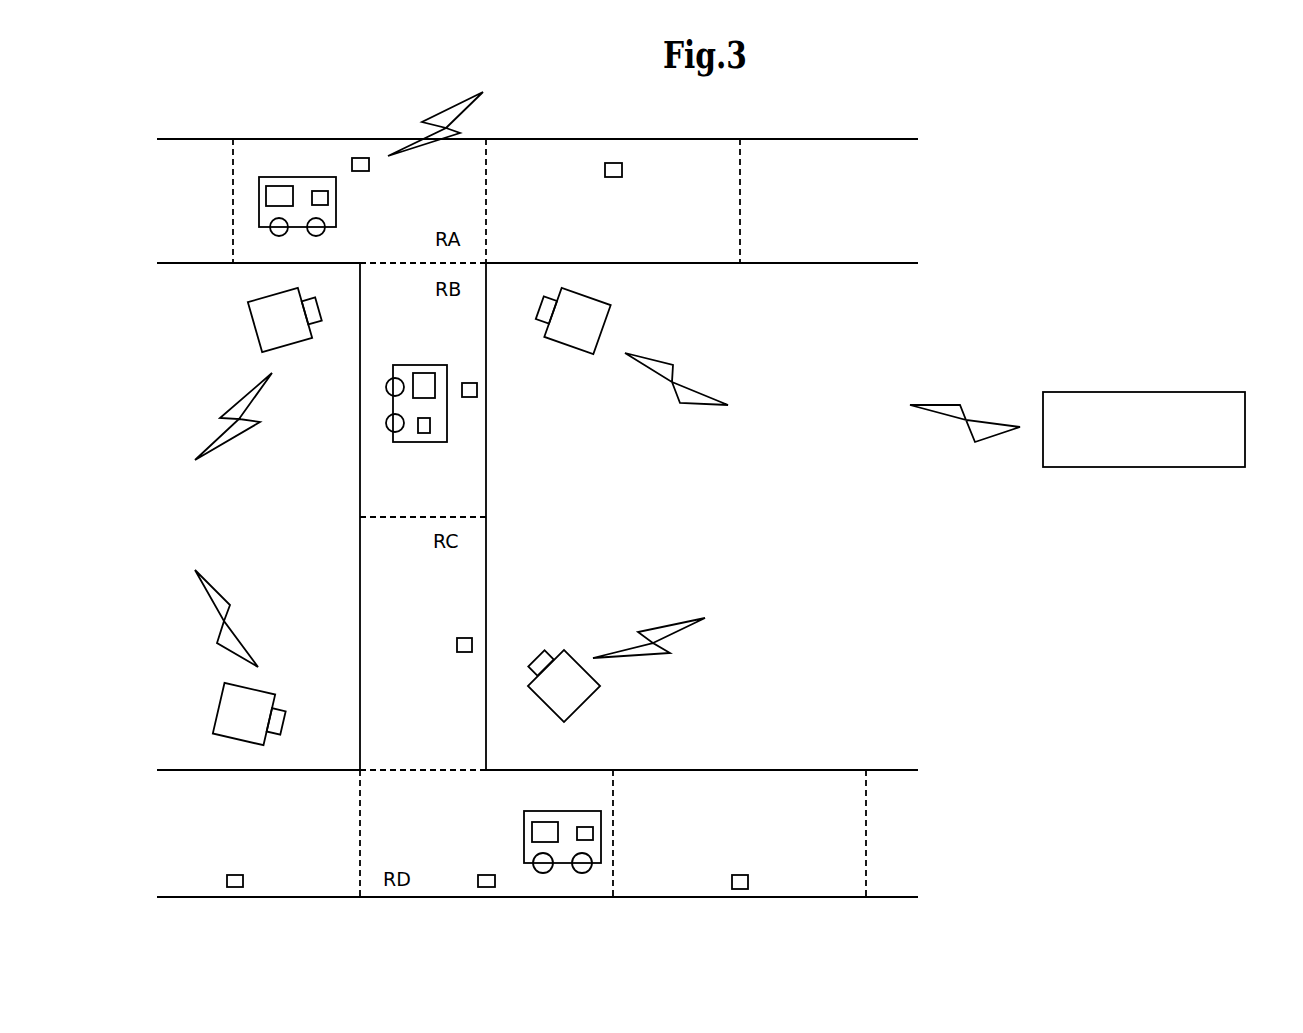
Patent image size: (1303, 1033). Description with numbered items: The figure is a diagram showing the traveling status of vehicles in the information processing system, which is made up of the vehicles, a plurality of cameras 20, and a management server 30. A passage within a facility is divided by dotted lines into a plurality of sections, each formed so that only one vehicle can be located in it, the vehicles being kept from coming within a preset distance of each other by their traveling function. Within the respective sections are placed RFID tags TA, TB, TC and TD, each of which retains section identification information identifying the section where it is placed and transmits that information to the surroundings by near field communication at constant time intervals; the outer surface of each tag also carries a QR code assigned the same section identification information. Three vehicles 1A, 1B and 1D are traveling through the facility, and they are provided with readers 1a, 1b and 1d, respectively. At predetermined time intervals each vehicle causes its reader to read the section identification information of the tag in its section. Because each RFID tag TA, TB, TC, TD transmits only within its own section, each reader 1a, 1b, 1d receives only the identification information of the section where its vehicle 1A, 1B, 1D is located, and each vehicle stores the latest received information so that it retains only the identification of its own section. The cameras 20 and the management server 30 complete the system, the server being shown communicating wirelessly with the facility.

The vehicle 1A is at (297, 177).
The reader 1a is at (320, 191).
The RFID tag TA is at (360, 158).
The vehicle 1B is at (447, 400).
The reader 1b is at (430, 425).
The RFID tag TB is at (477, 388).
The RFID tag TC is at (472, 638).
The vehicle 1D is at (562, 810).
The reader 1d is at (587, 827).
The RFID tag TD is at (487, 888).
The camera 20 is at (248, 318).
The management server 30 is at (1195, 392).